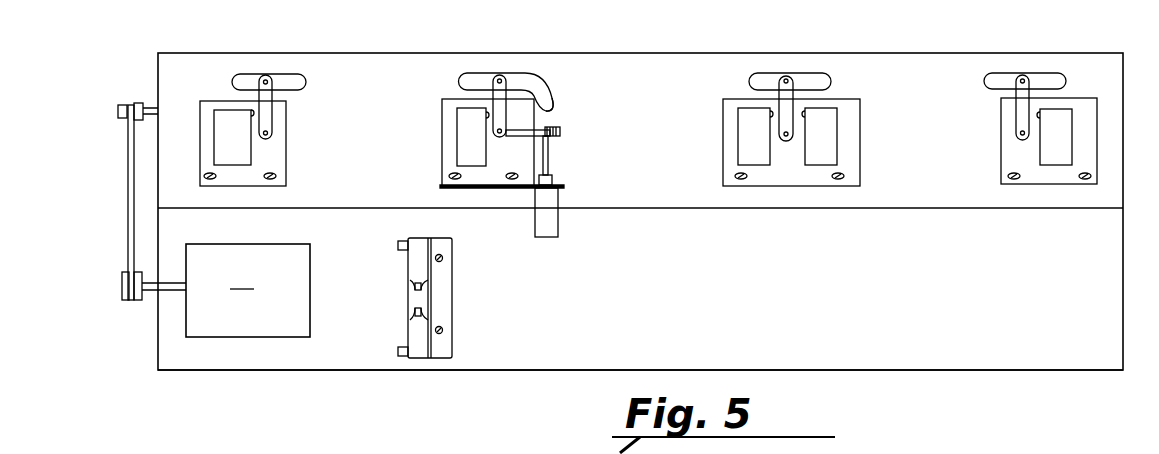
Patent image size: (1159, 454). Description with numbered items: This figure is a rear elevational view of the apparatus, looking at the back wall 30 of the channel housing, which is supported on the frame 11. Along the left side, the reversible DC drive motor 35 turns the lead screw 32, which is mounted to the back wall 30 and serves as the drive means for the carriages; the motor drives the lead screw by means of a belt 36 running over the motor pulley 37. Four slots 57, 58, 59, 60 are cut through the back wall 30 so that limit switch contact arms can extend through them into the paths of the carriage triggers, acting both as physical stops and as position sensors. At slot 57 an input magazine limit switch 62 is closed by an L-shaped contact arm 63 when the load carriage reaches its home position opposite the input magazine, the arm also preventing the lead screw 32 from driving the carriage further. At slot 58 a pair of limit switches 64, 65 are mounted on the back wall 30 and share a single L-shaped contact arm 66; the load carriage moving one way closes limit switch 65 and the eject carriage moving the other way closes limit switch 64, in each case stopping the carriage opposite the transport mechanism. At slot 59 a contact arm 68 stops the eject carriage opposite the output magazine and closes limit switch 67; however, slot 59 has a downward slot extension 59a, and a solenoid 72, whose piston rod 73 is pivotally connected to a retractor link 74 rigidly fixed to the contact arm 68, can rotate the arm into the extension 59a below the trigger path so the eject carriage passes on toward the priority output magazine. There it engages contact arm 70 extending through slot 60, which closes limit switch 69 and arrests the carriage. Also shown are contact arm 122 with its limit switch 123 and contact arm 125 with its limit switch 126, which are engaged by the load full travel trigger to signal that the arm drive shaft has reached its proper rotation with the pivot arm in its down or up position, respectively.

The frame 11 is at (862, 345).
The back wall 30 is at (667, 70).
The lead screw 32 is at (155, 105).
The reversible DC drive motor 35 is at (122, 104).
The belt 36 is at (128, 178).
The motor pulley 37 is at (125, 282).
The slot 57 is at (1040, 73).
The slot 58 is at (808, 73).
The slot 59 is at (485, 73).
The slot extension 59a is at (552, 105).
The slot 60 is at (256, 75).
The input magazine limit switch 62 is at (1060, 133).
The L-shaped contact arm 63 is at (1020, 108).
The limit switch 64 is at (830, 135).
The limit switch 65 is at (748, 130).
The L-shaped contact arm 66 is at (785, 105).
The limit switch 67 is at (465, 137).
The contact arm 68 is at (495, 110).
The limit switch 69 is at (222, 126).
The contact arm 70 is at (270, 118).
The solenoid 72 is at (552, 238).
The piston rod 73 is at (550, 163).
The retractor link 74 is at (556, 128).
The contact arm 122 is at (418, 285).
The limit switch 123 is at (418, 258).
The contact arm 125 is at (417, 310).
The limit switch 126 is at (416, 332).